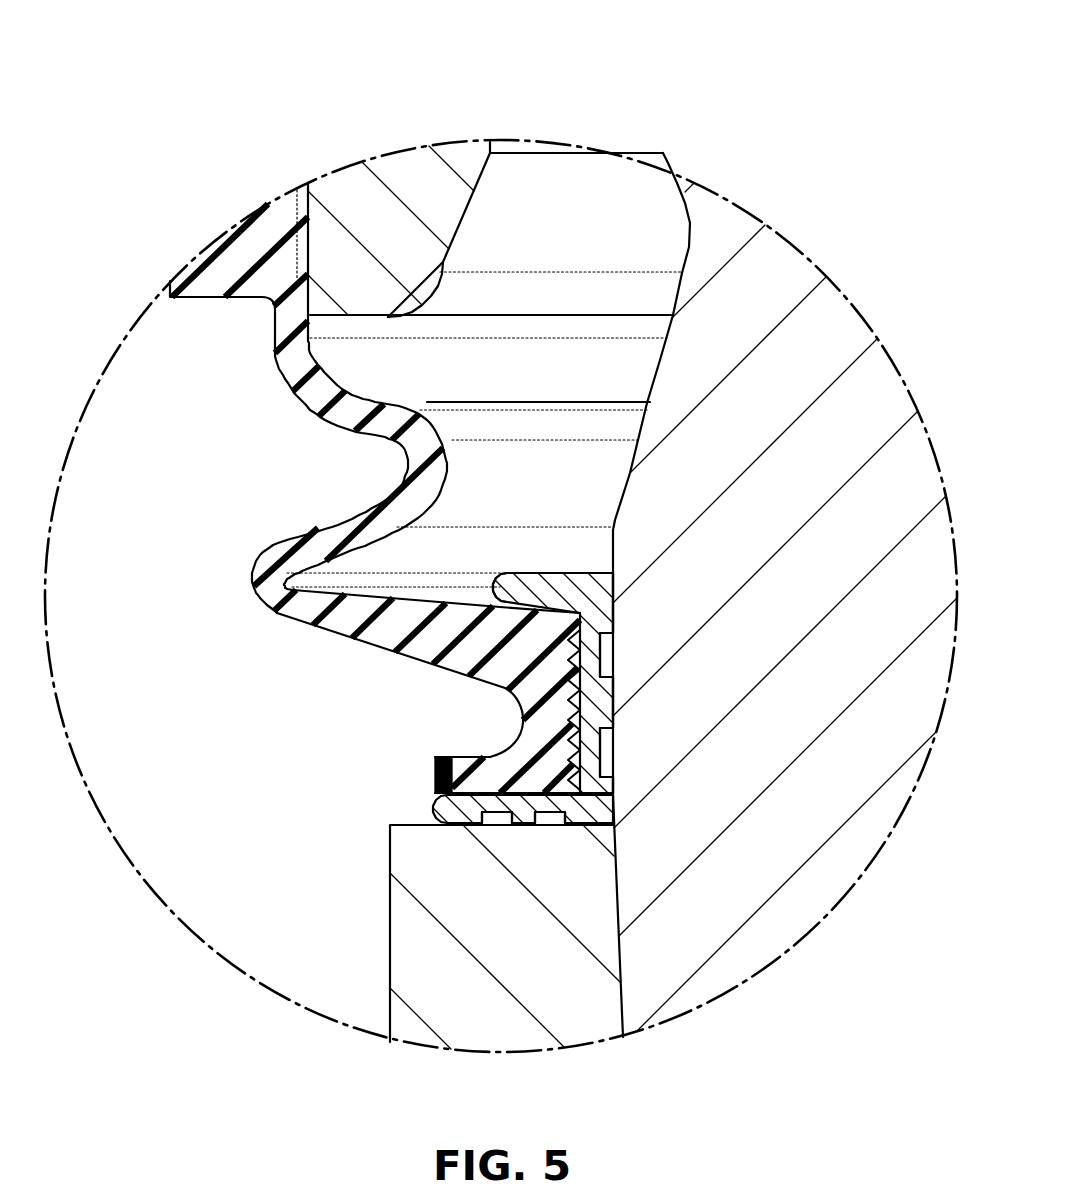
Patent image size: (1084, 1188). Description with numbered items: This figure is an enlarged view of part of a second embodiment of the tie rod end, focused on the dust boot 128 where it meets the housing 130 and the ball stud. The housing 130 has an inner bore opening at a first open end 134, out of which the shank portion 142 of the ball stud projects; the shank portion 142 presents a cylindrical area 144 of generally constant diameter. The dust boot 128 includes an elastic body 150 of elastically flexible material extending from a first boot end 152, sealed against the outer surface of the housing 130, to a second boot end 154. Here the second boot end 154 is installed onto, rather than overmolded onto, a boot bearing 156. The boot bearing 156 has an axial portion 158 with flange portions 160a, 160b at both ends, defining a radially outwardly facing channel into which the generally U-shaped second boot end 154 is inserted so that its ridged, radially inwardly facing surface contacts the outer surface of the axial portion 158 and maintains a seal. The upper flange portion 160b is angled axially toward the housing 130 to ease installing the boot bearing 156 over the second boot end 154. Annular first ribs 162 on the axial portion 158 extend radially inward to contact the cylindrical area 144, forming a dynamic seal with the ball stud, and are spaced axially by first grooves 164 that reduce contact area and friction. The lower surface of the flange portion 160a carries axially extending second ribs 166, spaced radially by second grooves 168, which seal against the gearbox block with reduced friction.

The housing 130 is at (398, 148).
The first boot end 152 is at (252, 244).
The first open end 134 is at (363, 300).
The shank portion 142 is at (870, 406).
The elastic body 150 is at (328, 526).
The dust boot 128 is at (391, 470).
The upper flange portion 160b is at (547, 586).
The axial portion 158 is at (500, 583).
The first ribs 162 is at (602, 611).
The first grooves 164 is at (607, 657).
The second boot end 154 is at (537, 692).
The cylindrical area 144 is at (588, 694).
The flange portion 160a is at (494, 798).
The boot bearing 156 is at (447, 826).
The second ribs 166 is at (462, 826).
The second grooves 168 is at (493, 826).